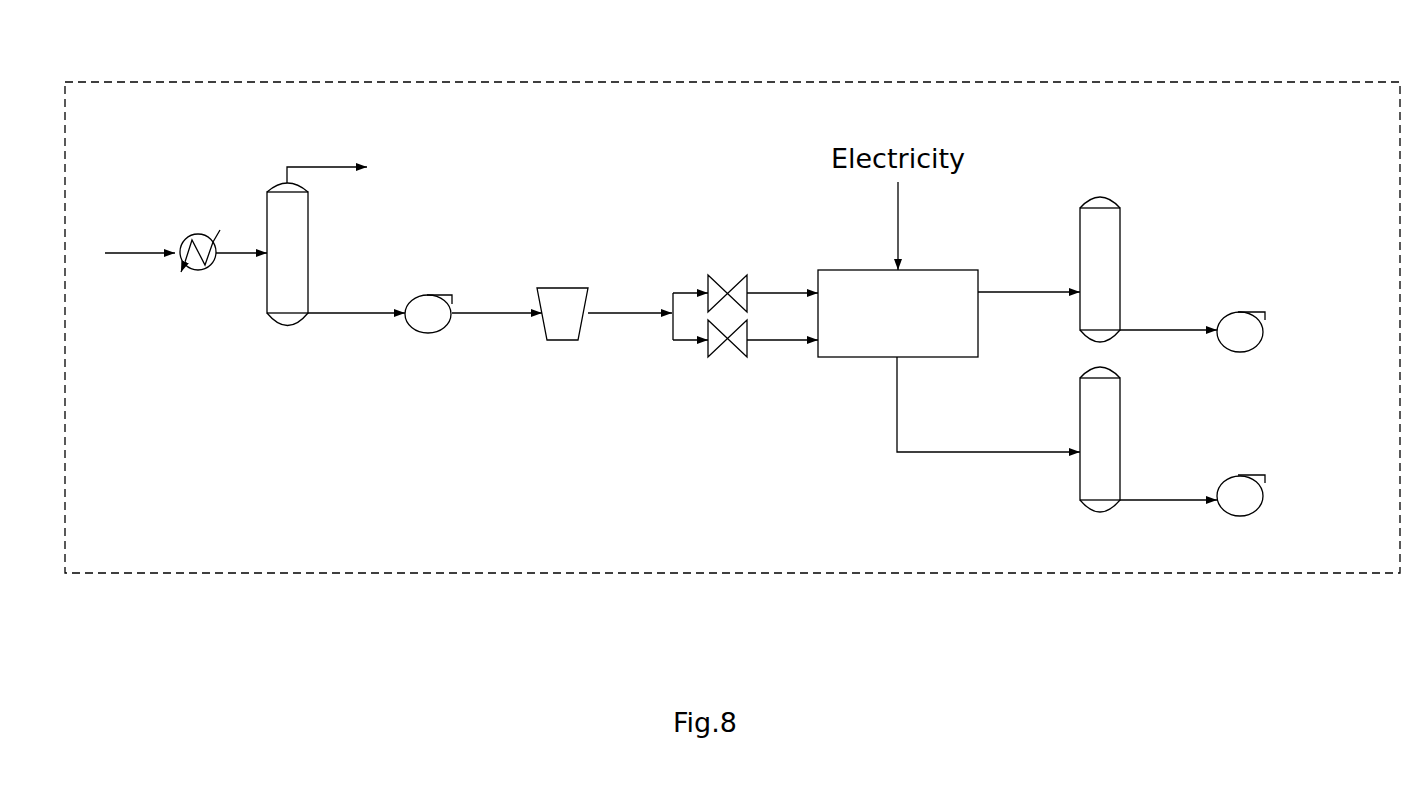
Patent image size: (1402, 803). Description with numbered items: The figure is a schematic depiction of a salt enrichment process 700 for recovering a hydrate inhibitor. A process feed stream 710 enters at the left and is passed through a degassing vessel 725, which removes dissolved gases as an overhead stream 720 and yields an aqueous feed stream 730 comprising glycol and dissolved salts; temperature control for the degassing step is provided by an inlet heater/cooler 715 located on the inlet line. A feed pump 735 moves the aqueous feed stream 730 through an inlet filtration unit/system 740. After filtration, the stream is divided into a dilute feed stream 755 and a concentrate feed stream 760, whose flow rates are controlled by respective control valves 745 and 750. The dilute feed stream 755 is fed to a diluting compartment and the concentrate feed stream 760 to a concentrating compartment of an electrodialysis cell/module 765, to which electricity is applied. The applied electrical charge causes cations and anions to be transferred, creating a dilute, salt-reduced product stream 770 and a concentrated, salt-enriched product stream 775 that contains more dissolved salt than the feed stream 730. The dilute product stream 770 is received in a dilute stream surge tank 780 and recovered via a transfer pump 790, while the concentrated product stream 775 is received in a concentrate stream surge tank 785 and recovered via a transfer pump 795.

The salt enrichment process 700 is at (723, 80).
The process feed stream 710 is at (134, 250).
The inlet heater/cooler 715 is at (198, 232).
The stream 720 is at (325, 163).
The degassing vessel 725 is at (308, 227).
The aqueous feed stream 730 is at (362, 311).
The feed pump 735 is at (432, 293).
The inlet filtration unit/system 740 is at (567, 287).
The control valve 745 is at (710, 272).
The control valve 750 is at (708, 360).
The dilute feed stream 755 is at (790, 291).
The concentrate feed stream 760 is at (783, 342).
The electrodialysis cell/module 765 is at (972, 360).
The dilute/salt-reduced product stream 770 is at (1048, 288).
The concentrated/salt-enriched product stream 775 is at (1037, 455).
The dilute stream surge tank 780 is at (1120, 245).
The concentrate stream surge tank 785 is at (1120, 413).
The transfer pump 790 is at (1243, 311).
The transfer pump 795 is at (1245, 474).